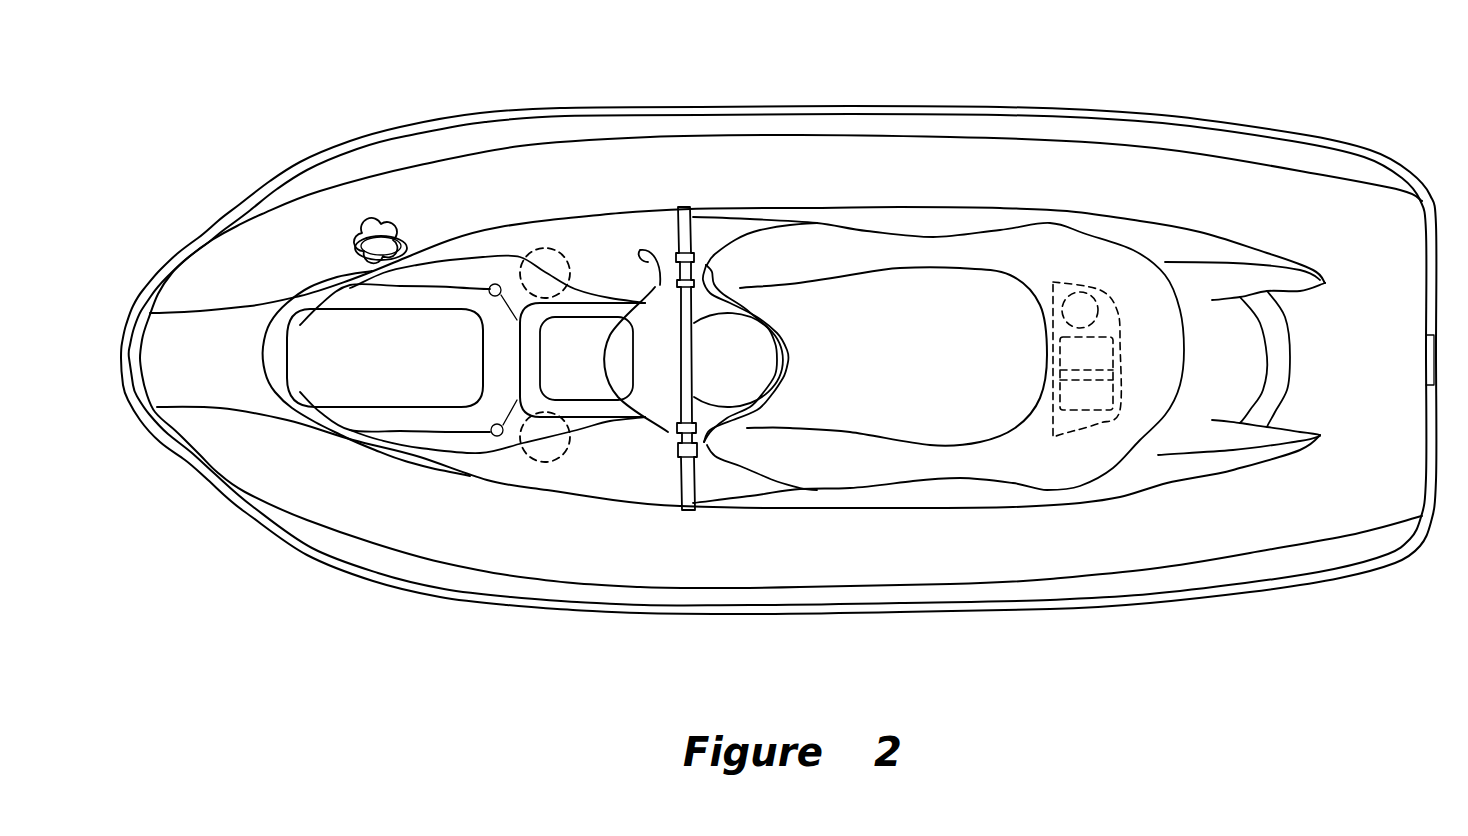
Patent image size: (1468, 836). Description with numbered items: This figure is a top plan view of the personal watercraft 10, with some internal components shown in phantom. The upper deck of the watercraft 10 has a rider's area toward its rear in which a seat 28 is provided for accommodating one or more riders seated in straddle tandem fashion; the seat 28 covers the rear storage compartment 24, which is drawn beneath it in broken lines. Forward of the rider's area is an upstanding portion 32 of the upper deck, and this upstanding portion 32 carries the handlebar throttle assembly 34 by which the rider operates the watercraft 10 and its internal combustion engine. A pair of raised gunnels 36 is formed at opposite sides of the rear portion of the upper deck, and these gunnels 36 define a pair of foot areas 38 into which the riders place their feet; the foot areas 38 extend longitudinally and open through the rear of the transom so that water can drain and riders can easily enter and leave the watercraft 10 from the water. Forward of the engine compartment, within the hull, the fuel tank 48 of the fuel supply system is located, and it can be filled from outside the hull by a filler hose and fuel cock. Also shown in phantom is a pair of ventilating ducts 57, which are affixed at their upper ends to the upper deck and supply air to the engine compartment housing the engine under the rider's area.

The watercraft 10 is at (975, 86).
The rear storage compartment 24 is at (1100, 367).
The seat 28 is at (908, 288).
The upstanding portion 32 is at (650, 490).
The handlebar throttle assembly 34 is at (667, 364).
The raised gunnels 36 is at (953, 609).
The foot areas 38 is at (1210, 543).
The fuel tank 48 is at (386, 226).
The ventilating ducts 57 is at (527, 252).